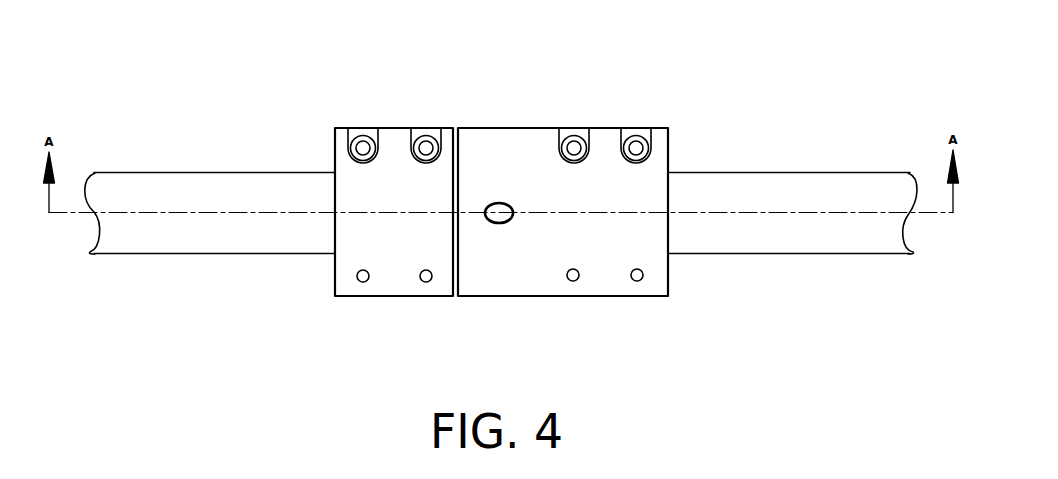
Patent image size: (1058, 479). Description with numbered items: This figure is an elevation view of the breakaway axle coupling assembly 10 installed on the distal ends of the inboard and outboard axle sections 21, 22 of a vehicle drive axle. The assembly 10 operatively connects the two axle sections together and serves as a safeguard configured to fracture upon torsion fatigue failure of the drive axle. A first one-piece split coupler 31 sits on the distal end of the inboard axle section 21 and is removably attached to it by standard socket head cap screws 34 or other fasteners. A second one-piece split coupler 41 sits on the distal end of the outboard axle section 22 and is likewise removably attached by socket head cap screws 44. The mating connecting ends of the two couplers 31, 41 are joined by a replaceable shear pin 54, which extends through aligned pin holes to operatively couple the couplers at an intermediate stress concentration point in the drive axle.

The breakaway axle coupling assembly 10 is at (690, 99).
The inboard axle section 21 is at (813, 175).
The outboard axle section 22 is at (215, 187).
The first one-piece split coupler 31 is at (564, 180).
The socket head cap screws 34 is at (632, 130).
The second one-piece split coupler 41 is at (355, 174).
The socket head cap screws 44 is at (425, 130).
The replaceable shear pin 54 is at (500, 208).